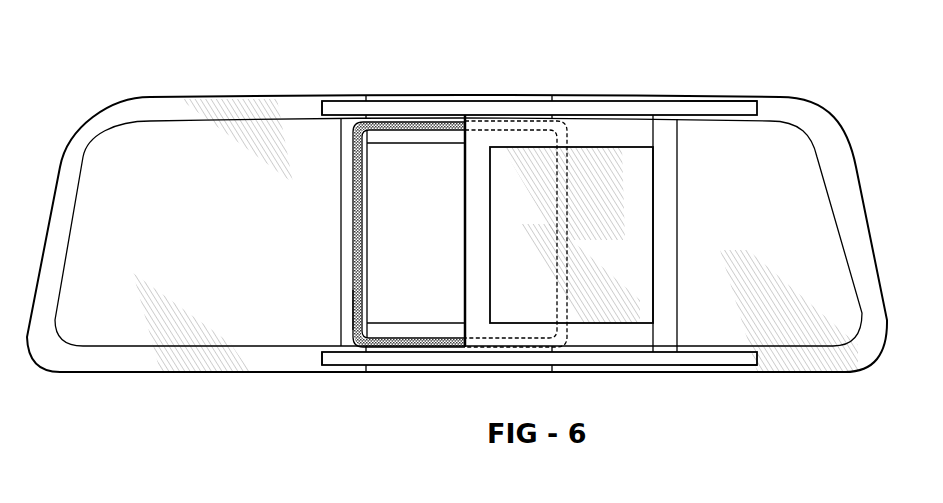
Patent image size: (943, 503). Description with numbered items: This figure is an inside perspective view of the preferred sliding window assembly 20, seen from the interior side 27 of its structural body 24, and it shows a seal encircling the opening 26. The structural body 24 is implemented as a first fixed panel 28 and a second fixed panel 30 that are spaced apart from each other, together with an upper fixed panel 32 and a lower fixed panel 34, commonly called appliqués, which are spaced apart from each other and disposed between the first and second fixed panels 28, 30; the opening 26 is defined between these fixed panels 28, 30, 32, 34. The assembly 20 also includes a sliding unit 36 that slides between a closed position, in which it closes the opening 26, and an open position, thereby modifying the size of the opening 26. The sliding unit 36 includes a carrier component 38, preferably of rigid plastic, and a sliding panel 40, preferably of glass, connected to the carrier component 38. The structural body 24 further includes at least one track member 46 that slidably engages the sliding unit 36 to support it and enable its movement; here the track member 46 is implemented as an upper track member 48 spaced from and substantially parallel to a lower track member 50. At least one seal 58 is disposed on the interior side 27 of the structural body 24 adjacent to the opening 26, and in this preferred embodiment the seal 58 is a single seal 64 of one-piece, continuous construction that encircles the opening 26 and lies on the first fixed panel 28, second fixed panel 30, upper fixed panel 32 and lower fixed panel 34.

The sliding window assembly 20 is at (453, 215).
The structural body 24 is at (52, 159).
The opening 26 is at (390, 247).
The interior side 27 is at (484, 232).
The first fixed panel 28 is at (790, 152).
The second fixed panel 30 is at (88, 335).
The upper fixed panel 32 is at (402, 100).
The lower fixed panel 34 is at (462, 367).
The sliding unit 36 is at (612, 261).
The carrier component 38 is at (677, 237).
The sliding panel 40 is at (642, 312).
The track member 46 is at (315, 108).
The upper track member 48 is at (692, 102).
The lower track member 50 is at (692, 365).
The seal 58 is at (349, 220).
The single seal 64 is at (352, 297).